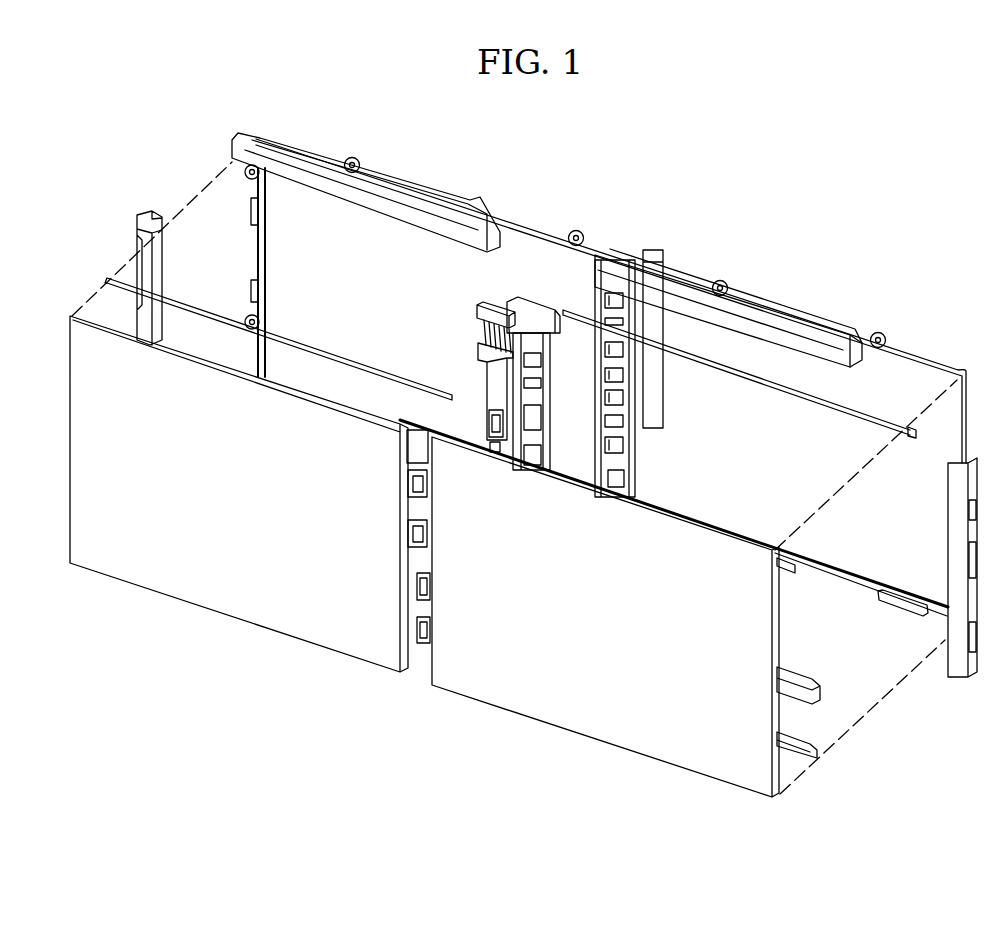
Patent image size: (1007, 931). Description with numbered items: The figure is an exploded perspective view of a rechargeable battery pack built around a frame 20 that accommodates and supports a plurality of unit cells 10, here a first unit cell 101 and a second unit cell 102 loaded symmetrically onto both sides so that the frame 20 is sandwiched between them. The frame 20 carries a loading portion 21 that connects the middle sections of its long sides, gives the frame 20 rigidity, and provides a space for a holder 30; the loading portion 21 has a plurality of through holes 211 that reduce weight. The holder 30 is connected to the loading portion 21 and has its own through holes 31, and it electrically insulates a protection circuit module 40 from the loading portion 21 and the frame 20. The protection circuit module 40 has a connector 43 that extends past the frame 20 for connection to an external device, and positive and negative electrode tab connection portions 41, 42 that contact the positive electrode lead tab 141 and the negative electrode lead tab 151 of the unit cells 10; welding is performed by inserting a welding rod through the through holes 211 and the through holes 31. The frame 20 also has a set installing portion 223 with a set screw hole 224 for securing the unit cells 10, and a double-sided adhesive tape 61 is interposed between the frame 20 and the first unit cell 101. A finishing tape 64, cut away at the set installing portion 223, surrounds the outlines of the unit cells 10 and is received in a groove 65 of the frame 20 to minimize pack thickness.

The unit cells 10 is at (432, 556).
The first unit cell 101 is at (323, 637).
The second unit cell 102 is at (450, 683).
The positive electrode lead tab 141 is at (428, 538).
The negative electrode lead tab 151 is at (407, 484).
The frame 20 is at (534, 463).
The loading portion 21 is at (651, 338).
The through holes 211 is at (623, 400).
The set installing portion 223 is at (716, 283).
The set screw hole 224 is at (726, 290).
The holder 30 is at (603, 336).
The through holes 31 is at (537, 422).
The protection circuit module 40 is at (386, 532).
The positive electrode tab connection portion 41 is at (497, 457).
The negative electrode tab connection portion 42 is at (487, 413).
The connector 43 is at (478, 307).
The double-sided adhesive tape 61 is at (307, 347).
The finishing tape 64 is at (803, 343).
The groove 65 is at (783, 309).